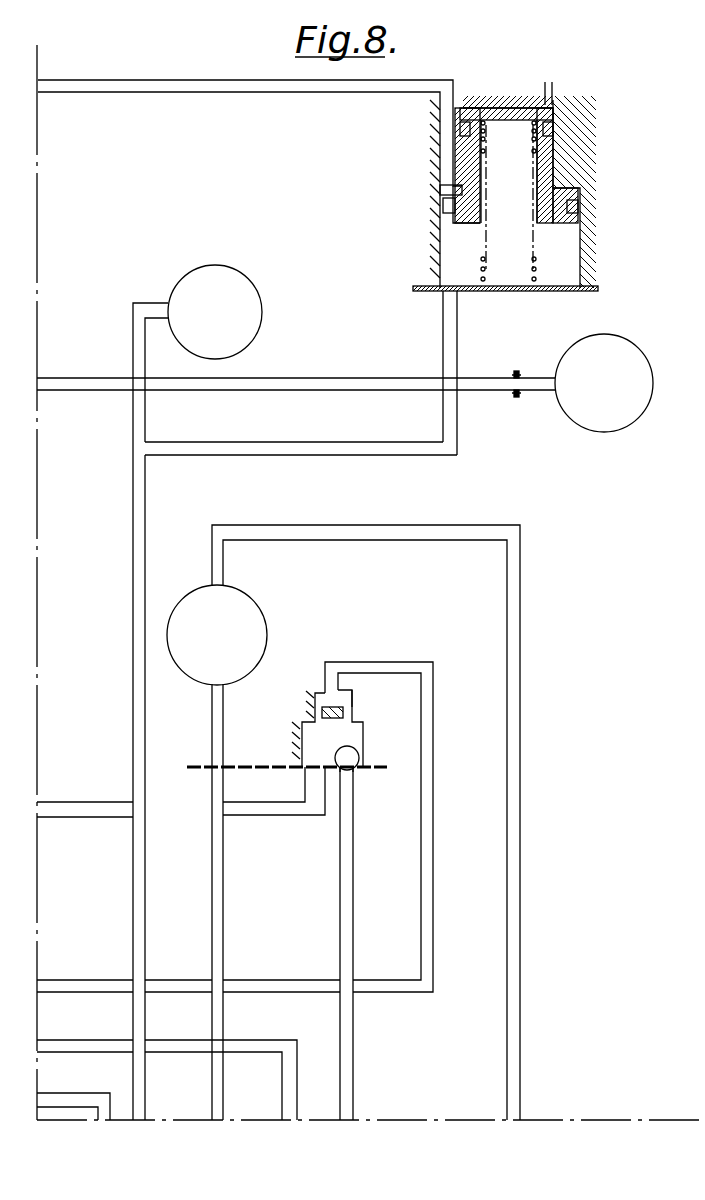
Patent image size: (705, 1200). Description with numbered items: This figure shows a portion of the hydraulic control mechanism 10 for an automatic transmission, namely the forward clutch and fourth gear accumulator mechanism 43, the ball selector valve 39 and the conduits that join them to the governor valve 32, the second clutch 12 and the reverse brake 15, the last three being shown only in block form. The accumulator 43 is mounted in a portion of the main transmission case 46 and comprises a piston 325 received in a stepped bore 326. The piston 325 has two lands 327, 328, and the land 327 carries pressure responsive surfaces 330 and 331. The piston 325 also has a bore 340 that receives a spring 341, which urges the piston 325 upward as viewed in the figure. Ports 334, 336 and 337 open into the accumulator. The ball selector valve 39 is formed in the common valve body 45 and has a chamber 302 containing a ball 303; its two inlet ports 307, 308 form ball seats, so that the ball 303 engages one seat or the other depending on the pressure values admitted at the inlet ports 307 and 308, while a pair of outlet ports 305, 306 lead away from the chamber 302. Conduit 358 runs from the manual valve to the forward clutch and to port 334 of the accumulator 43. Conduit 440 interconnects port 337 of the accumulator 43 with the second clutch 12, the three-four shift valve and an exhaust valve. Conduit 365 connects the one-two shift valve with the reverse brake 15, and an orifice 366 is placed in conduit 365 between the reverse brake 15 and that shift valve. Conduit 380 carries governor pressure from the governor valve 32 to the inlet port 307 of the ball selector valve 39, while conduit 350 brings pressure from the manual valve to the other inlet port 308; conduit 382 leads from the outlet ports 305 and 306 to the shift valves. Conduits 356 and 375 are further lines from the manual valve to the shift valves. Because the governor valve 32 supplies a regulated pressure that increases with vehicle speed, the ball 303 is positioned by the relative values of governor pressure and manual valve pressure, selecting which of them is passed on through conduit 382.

The control mechanism 10 is at (566, 558).
The second clutch 12 is at (251, 285).
The reverse brake 15 is at (641, 351).
The governor valve 32 is at (252, 612).
The ball selector valve 39 is at (414, 652).
The forward clutch and fourth gear accumulator mechanism 43 is at (650, 150).
The valve body 45 is at (295, 746).
The main transmission case portions 46 is at (595, 256).
The chamber 302 is at (352, 713).
The ball 303 is at (362, 755).
The outlet port 305 is at (316, 692).
The outlet port 306 is at (357, 696).
The inlet port 307 is at (318, 768).
The inlet port 308 is at (351, 773).
The piston 325 is at (544, 170).
The stepped bore 326 is at (581, 207).
The land 327 is at (579, 189).
The land 328 is at (562, 113).
The pressure responsive surface 330 is at (462, 218).
The pressure responsive surface 331 is at (458, 193).
The port 334 is at (441, 176).
The port 336 is at (553, 99).
The port 337 is at (445, 292).
The bore 340 is at (540, 142).
The spring 341 is at (480, 240).
The conduit 350 is at (353, 877).
The conduit 356 is at (112, 1040).
The conduit 358 is at (254, 86).
The conduit 365 is at (360, 378).
The orifice 366 is at (518, 372).
The conduit 375 is at (84, 1092).
The conduit 380 is at (223, 894).
The conduit 382 is at (300, 980).
The conduit 440 is at (342, 443).